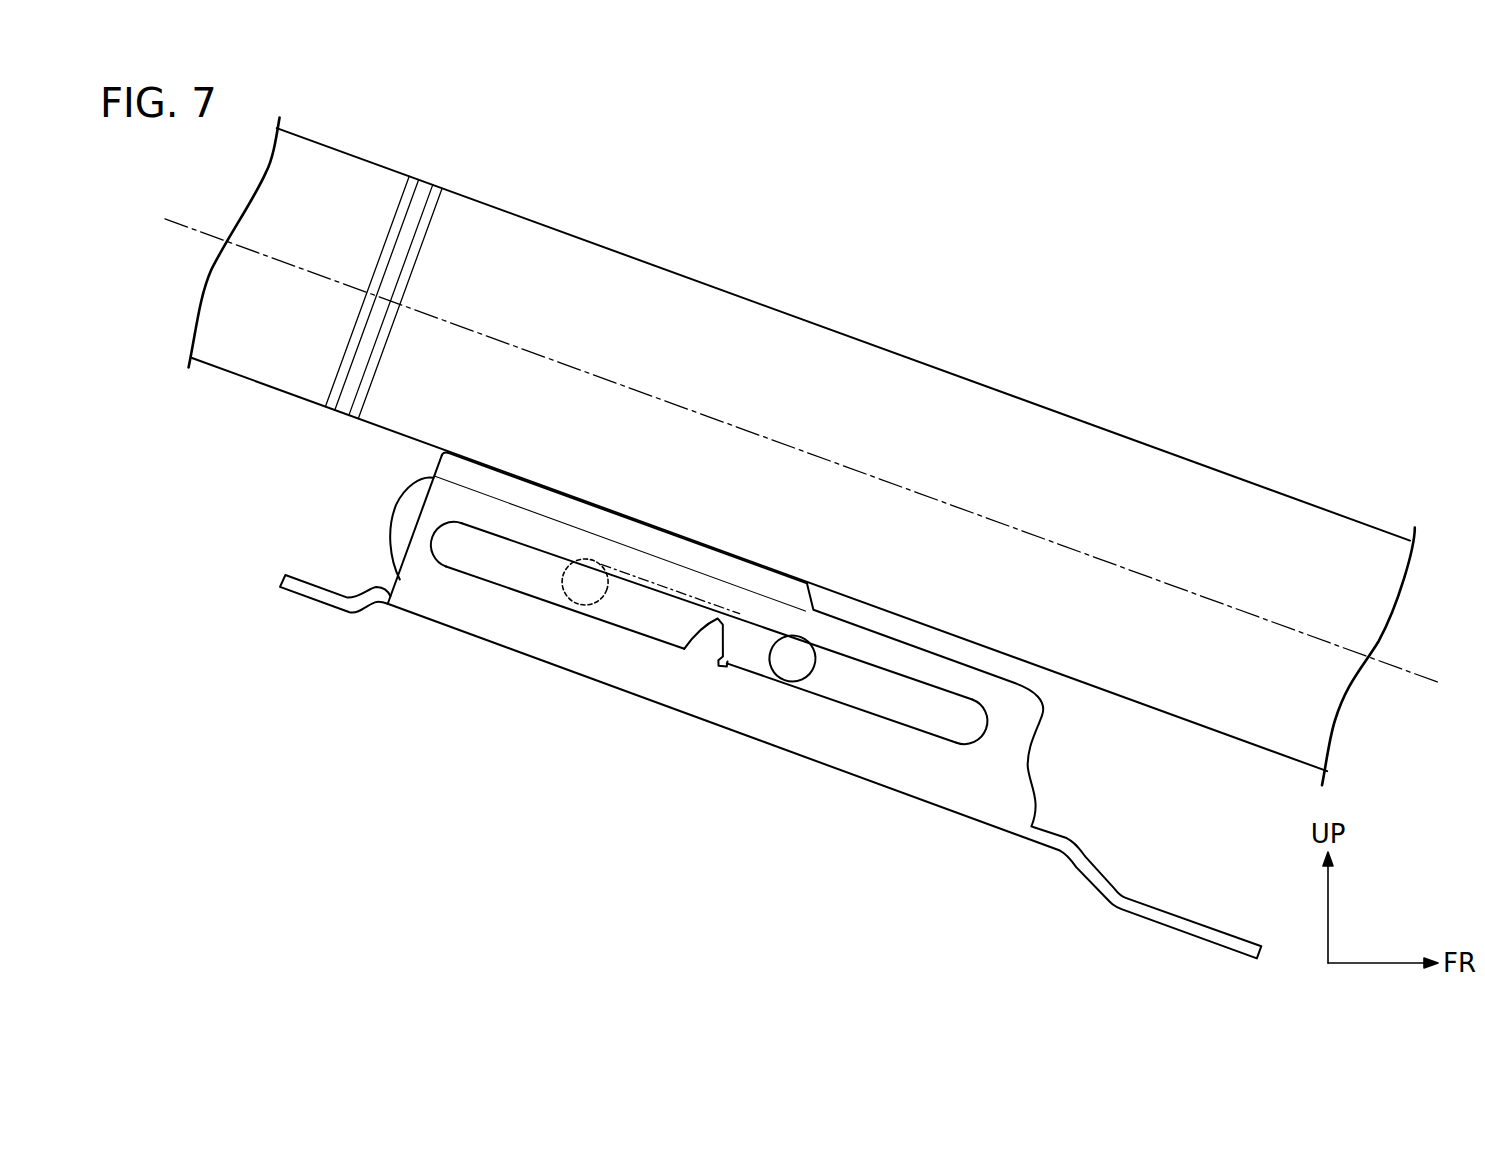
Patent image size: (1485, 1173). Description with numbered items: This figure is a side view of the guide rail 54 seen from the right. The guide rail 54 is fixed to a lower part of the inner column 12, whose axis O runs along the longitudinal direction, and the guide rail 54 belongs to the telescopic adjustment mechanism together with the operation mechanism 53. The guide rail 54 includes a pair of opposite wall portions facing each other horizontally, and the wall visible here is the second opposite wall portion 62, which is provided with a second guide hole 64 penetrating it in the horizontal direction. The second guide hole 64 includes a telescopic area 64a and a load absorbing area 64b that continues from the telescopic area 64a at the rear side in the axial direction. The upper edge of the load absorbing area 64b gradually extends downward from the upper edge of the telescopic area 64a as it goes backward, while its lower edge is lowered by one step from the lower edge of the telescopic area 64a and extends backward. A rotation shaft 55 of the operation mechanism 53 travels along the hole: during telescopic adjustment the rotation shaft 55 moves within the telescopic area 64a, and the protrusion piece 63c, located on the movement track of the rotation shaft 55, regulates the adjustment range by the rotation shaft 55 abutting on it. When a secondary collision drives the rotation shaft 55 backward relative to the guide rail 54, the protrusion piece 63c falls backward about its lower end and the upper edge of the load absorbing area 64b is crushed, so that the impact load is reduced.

The inner column 12 is at (845, 339).
The axis of pipe member O is at (1407, 670).
The second opposite wall portion 62 is at (1020, 742).
The guide rail 54 is at (867, 785).
The second guide hole 64 is at (941, 689).
The telescopic area 64a is at (833, 690).
The load absorbing area 64b is at (623, 629).
The protrusion piece 63c is at (700, 647).
The rotation shaft 55 is at (571, 597).
The operation mechanism 53 is at (773, 728).